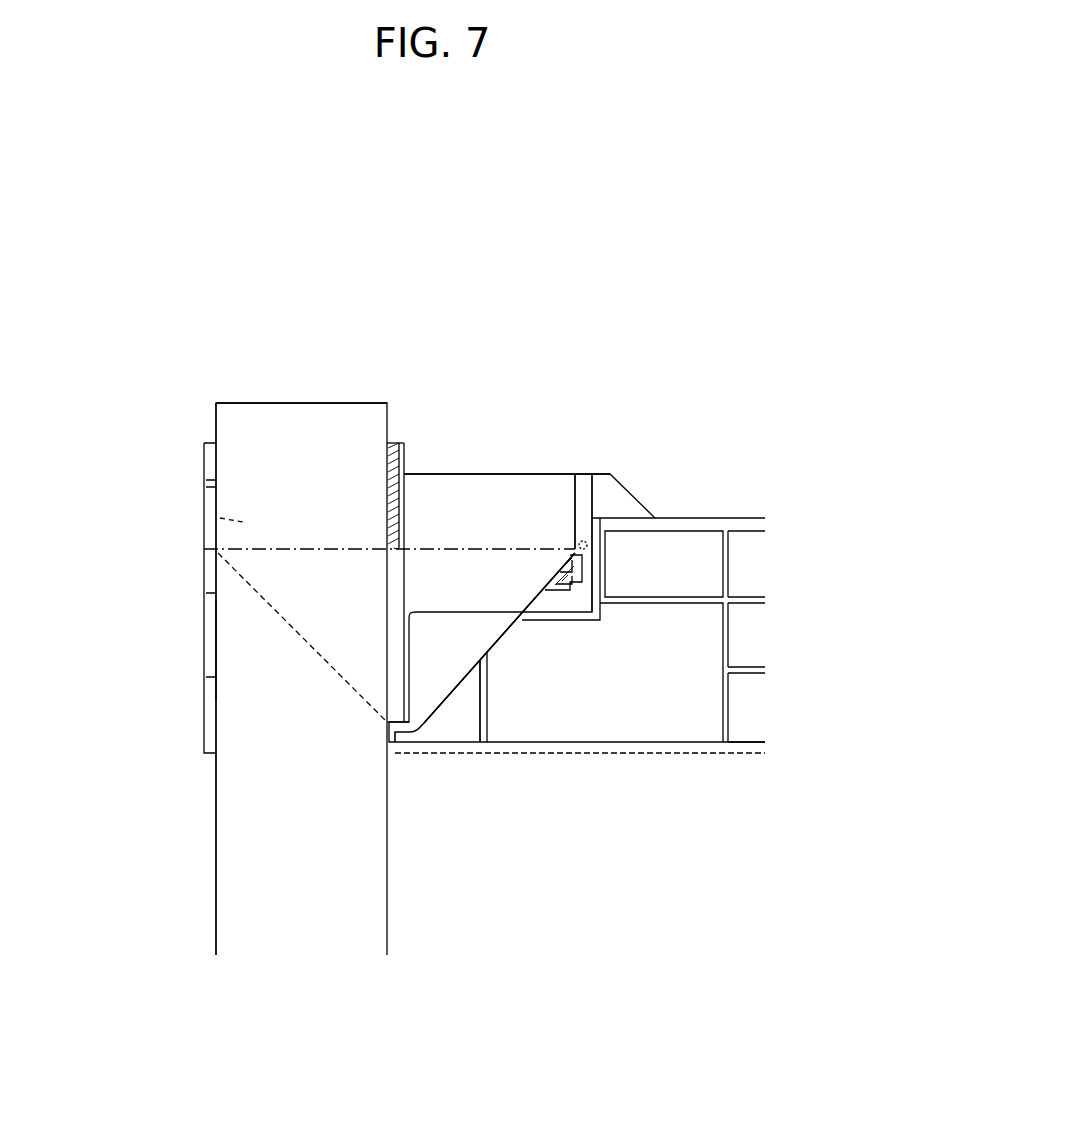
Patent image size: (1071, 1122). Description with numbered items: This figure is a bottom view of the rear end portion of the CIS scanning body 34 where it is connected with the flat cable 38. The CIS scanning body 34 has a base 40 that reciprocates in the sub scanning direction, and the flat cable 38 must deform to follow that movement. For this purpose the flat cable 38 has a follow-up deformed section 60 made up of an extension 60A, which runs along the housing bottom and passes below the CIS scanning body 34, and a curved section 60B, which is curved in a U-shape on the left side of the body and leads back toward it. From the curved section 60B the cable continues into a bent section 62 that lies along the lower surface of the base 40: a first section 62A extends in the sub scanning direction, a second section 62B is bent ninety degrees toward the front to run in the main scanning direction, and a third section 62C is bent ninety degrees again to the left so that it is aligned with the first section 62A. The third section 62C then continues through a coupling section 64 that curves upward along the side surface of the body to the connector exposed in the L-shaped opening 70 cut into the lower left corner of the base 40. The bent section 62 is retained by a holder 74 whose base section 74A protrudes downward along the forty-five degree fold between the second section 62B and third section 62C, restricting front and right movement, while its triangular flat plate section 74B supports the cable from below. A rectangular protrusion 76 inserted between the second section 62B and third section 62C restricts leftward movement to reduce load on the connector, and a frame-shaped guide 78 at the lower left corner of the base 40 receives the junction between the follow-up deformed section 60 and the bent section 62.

The CIS scanning body 34 is at (627, 762).
The flat cable 38 is at (435, 323).
The base 40 is at (722, 518).
The follow-up deformed section 60 is at (356, 392).
The extension 60A is at (237, 632).
The curved section 60B is at (237, 433).
The bent section 62 is at (440, 455).
The first section 62A is at (197, 527).
The second section 62B is at (397, 693).
The third section 62C is at (557, 513).
The coupling section 64 is at (530, 490).
The opening 70 is at (583, 545).
The holder 74 is at (490, 855).
The base section 74A is at (455, 693).
The flat plate section 74B is at (435, 678).
The protrusion 76 is at (399, 518).
The guide 78 is at (205, 472).